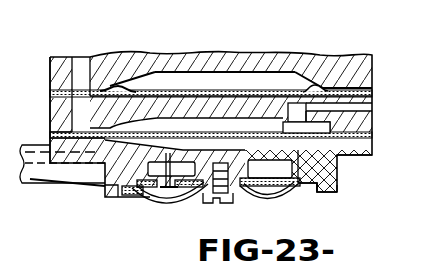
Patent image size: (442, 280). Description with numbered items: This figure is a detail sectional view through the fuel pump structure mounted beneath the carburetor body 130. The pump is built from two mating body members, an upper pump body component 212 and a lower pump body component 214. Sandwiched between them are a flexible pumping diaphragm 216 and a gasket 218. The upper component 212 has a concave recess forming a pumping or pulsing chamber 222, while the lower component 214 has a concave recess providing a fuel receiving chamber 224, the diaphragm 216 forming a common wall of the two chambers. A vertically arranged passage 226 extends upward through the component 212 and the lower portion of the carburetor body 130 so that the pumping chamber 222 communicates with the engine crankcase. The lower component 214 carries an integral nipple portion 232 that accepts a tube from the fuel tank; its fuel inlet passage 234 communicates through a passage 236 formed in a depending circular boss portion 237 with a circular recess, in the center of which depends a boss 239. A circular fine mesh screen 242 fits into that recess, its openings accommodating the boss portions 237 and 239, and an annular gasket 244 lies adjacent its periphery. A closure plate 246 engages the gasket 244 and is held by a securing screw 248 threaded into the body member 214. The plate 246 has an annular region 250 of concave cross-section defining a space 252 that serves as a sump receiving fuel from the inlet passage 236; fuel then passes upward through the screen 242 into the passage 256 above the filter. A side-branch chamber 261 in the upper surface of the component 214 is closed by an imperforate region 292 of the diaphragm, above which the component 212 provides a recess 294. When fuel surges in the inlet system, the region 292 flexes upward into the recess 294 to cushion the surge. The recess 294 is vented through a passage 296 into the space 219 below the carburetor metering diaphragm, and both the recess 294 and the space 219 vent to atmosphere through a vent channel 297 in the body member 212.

The carburetor body 130 is at (58, 61).
The vertically arranged passage 226 is at (79, 58).
The space below fuel metering diaphragm 219 is at (253, 100).
The passage 296 is at (297, 110).
The vent channel 297 is at (352, 110).
The gasket 218 is at (370, 118).
The flexible pumping diaphragm 216 is at (356, 137).
The recess 294 is at (338, 163).
The imperforate region of the diaphragm 292 is at (300, 150).
The chamber 261 is at (333, 186).
The passage 256 is at (325, 190).
The pump body component 214 is at (330, 196).
The fine mesh screen 242 is at (270, 170).
The space 252 is at (275, 186).
The boss 239 is at (243, 190).
The securing screw 248 is at (218, 203).
The depending circular boss portion 237 is at (172, 190).
The annular region 250 is at (175, 192).
The passage 236 is at (145, 205).
The closure plate 246 is at (145, 195).
The annular gasket 244 is at (106, 190).
The fuel inlet passage 234 is at (30, 191).
The pump body component 212 is at (52, 105).
The nipple portion 232 is at (43, 136).
The pumping chamber 222 is at (231, 114).
The fuel receiving chamber 224 is at (175, 148).